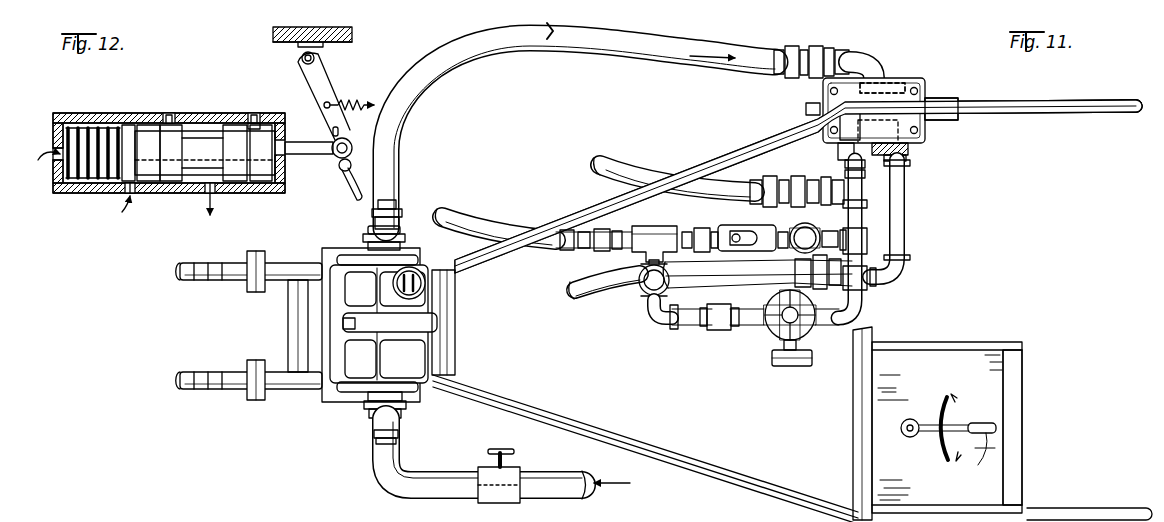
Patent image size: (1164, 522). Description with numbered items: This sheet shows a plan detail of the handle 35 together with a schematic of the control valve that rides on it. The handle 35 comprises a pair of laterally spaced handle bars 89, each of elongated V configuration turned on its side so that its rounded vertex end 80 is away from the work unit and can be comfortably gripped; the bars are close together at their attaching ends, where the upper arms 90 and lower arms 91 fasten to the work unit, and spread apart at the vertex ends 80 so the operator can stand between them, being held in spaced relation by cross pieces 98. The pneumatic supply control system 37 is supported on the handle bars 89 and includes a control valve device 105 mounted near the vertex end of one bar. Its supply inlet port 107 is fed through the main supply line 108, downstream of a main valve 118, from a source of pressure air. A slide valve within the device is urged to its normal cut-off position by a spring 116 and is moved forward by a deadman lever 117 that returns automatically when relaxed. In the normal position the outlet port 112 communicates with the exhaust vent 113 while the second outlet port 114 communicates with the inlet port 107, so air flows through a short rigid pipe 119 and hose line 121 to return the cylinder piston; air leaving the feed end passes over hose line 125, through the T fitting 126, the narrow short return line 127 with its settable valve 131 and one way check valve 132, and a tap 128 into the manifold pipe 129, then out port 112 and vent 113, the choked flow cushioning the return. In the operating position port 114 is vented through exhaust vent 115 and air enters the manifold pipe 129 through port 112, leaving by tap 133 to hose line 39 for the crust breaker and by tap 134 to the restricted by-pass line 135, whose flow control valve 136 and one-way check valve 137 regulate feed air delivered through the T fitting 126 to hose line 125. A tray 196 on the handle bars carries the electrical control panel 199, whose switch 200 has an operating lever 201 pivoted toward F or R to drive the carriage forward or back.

In FIG. 11, the handle 35 is at (492, 404).
In FIG. 11, the pneumatic supply control system 37 is at (690, 330).
In FIG. 11, the hose line 39 is at (617, 152).
In FIG. 11, the vertex end 80 is at (1130, 113).
In FIG. 11, the handle bars 89 is at (1072, 116).
In FIG. 11, the upper arms 90 is at (234, 390).
In FIG. 11, the lower arms 91 is at (198, 390).
In FIG. 11, the cross pieces 98 is at (852, 456).
In FIG. 12, the control valve device 105 is at (68, 112).
In FIG. 11, the control valve device 105 is at (912, 76).
In FIG. 12, the supply inlet port 107 is at (167, 121).
In FIG. 11, the supply inlet port 107 is at (885, 80).
In FIG. 11, the main supply line 108 is at (623, 126).
In FIG. 12, the outlet port 112 is at (135, 192).
In FIG. 11, the outlet port 112 is at (835, 149).
In FIG. 12, the exhaust vent 113 is at (72, 184).
In FIG. 11, the exhaust vent 113 is at (805, 109).
In FIG. 12, the second outlet port 114 is at (215, 186).
In FIG. 11, the second outlet port 114 is at (908, 151).
In FIG. 12, the exhaust vent 115 is at (255, 113).
In FIG. 12, the spring 116 is at (122, 118).
In FIG. 12, the deadman lever 117 is at (347, 178).
In FIG. 11, the deadman lever 117 is at (940, 99).
In FIG. 11, the main valve 118 is at (525, 470).
In FIG. 11, the short rigid pipe 119 is at (906, 208).
In FIG. 11, the hose line 121 is at (588, 304).
In FIG. 11, the hose line 125 is at (462, 212).
In FIG. 11, the T fitting 126 is at (651, 236).
In FIG. 11, the short return line 127 is at (715, 252).
In FIG. 11, the tap 128 is at (868, 243).
In FIG. 11, the manifold pipe 129 is at (866, 165).
In FIG. 11, the settable valve 131 is at (760, 256).
In FIG. 11, the one way check valve 132 is at (803, 225).
In FIG. 11, the tap 133 is at (855, 182).
In FIG. 11, the tap 134 is at (840, 340).
In FIG. 11, the by-pass line 135 is at (750, 328).
In FIG. 11, the flow control valve 136 is at (792, 367).
In FIG. 11, the one-way check valve 137 is at (636, 300).
In FIG. 11, the tray 196 is at (1025, 405).
In FIG. 11, the electrical control panel 199 is at (1005, 368).
In FIG. 11, the switch 200 is at (940, 444).
In FIG. 11, the operating lever 201 is at (978, 456).